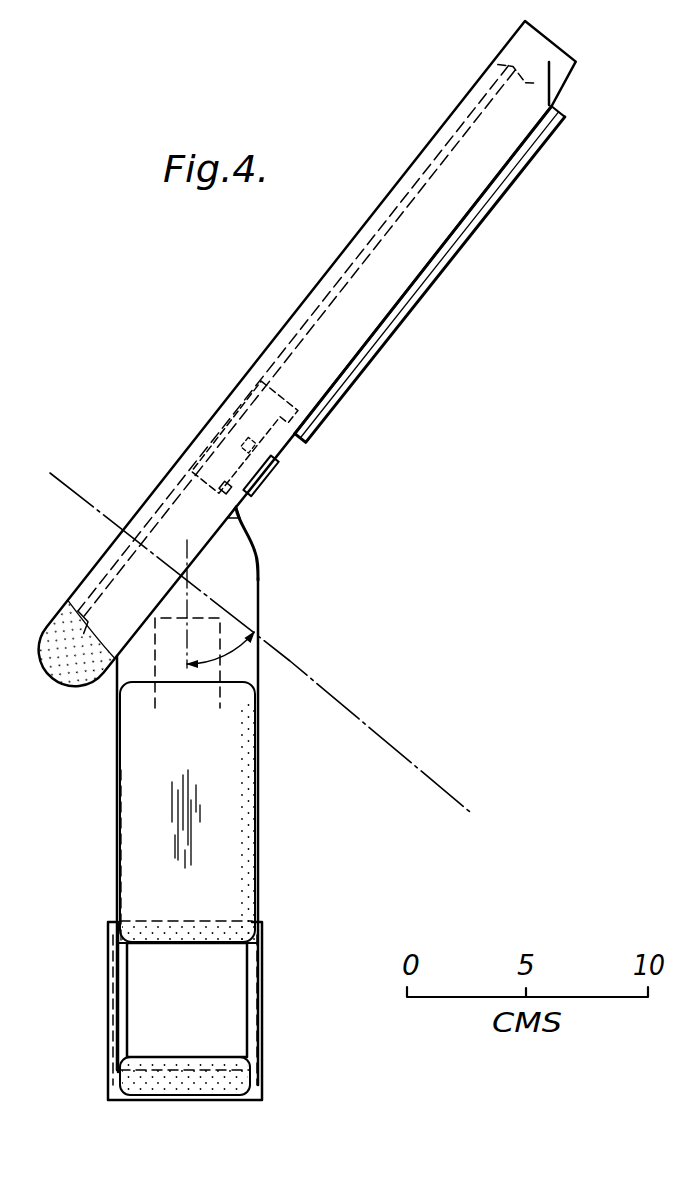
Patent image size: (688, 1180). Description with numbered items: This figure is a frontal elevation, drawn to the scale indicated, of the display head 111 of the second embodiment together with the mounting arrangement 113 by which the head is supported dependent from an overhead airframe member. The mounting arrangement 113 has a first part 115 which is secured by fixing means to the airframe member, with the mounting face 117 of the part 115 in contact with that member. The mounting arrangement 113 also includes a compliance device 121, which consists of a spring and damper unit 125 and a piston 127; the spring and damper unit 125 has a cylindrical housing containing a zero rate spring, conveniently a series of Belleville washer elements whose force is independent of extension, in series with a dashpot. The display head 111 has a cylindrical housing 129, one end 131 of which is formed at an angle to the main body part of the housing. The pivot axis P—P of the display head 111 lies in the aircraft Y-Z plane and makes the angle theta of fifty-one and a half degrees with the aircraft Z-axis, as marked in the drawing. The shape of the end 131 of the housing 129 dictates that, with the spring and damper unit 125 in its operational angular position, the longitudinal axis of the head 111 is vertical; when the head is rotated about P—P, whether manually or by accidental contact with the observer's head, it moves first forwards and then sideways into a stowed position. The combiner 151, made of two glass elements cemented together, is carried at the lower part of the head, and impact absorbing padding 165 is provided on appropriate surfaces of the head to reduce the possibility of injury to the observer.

The display head 111 is at (264, 887).
The mounting arrangement 113 is at (372, 382).
The first part 115 is at (92, 575).
The mounting face 117 is at (297, 313).
The compliance device 121 is at (447, 279).
The spring and damper unit 125 is at (392, 333).
The piston 127 is at (268, 425).
The cylindrical housing 129 is at (244, 660).
The end of the housing 131 is at (240, 520).
The combiner 151 is at (230, 975).
The impact absorbing padding 165 is at (230, 851).